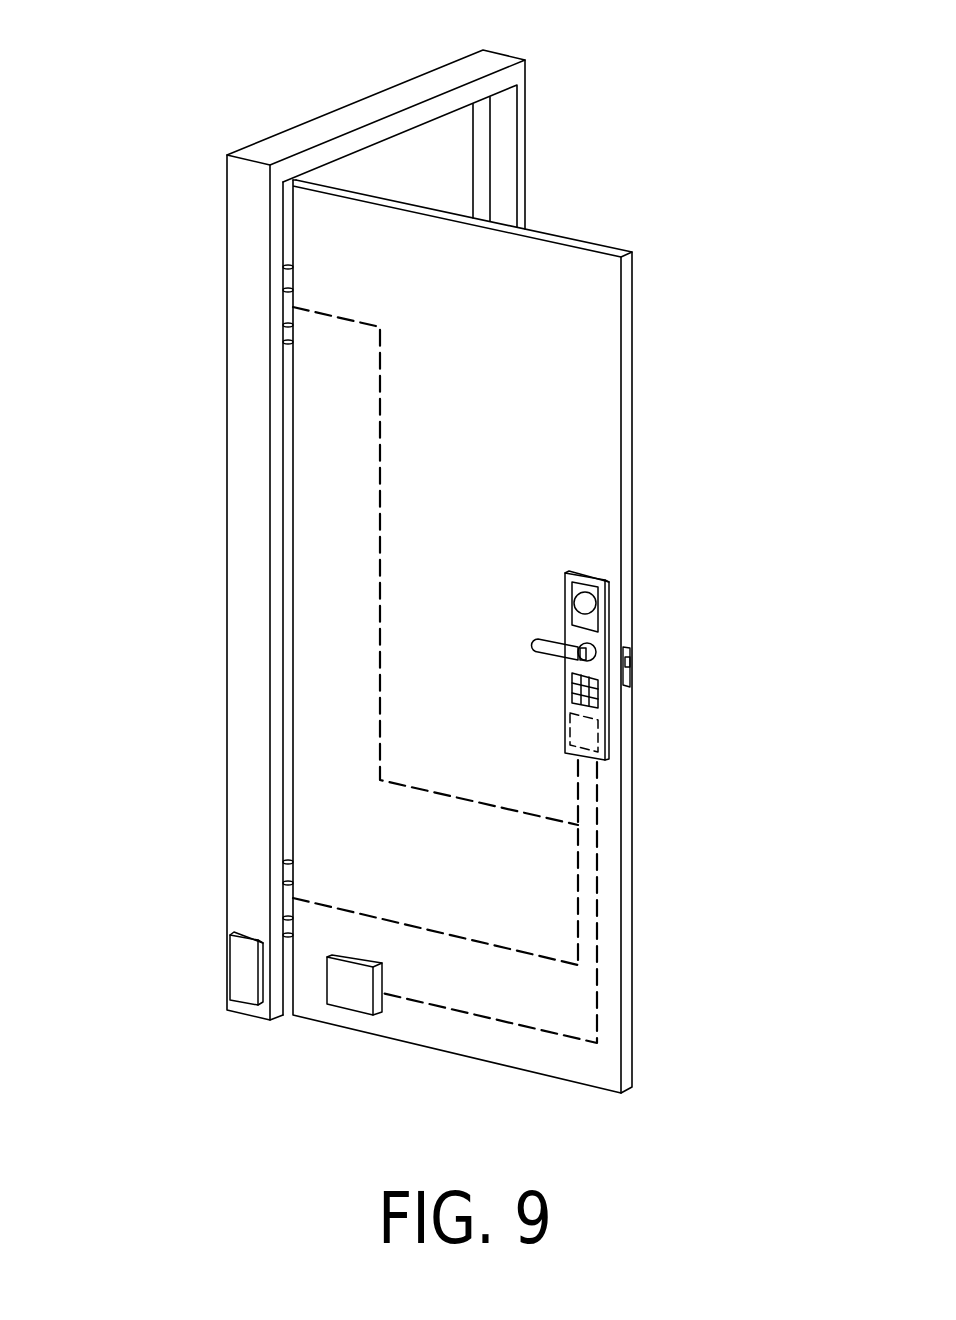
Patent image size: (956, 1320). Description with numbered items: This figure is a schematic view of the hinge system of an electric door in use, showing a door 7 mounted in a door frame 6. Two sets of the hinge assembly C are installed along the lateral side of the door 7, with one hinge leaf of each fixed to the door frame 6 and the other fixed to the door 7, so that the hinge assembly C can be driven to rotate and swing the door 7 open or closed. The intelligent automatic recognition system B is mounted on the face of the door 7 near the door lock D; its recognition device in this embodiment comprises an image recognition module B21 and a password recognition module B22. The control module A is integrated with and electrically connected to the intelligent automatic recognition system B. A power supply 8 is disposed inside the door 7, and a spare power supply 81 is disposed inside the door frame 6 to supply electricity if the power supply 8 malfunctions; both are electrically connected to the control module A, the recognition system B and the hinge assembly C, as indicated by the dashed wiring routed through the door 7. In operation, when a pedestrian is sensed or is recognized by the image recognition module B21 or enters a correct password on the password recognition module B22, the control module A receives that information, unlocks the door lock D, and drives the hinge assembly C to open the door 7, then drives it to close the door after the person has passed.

The door frame 6 is at (365, 112).
The door 7 is at (567, 262).
The hinge assembly C is at (292, 307).
The intelligent automatic recognition system B is at (653, 629).
The image recognition module B21 is at (595, 625).
The password recognition module B22 is at (597, 693).
The control module A is at (593, 740).
The door lock D is at (630, 660).
The spare power supply 81 is at (242, 960).
The power supply 8 is at (357, 998).